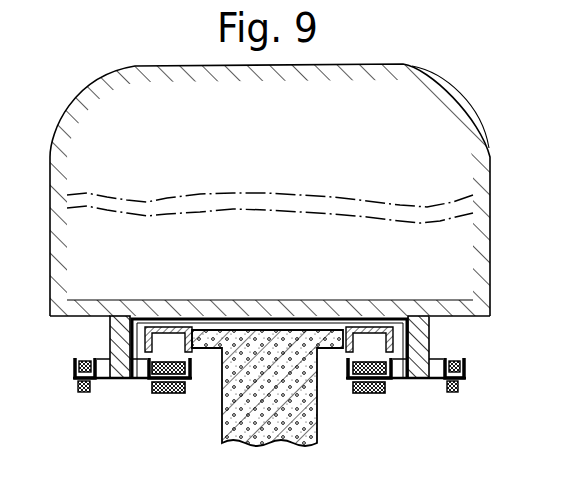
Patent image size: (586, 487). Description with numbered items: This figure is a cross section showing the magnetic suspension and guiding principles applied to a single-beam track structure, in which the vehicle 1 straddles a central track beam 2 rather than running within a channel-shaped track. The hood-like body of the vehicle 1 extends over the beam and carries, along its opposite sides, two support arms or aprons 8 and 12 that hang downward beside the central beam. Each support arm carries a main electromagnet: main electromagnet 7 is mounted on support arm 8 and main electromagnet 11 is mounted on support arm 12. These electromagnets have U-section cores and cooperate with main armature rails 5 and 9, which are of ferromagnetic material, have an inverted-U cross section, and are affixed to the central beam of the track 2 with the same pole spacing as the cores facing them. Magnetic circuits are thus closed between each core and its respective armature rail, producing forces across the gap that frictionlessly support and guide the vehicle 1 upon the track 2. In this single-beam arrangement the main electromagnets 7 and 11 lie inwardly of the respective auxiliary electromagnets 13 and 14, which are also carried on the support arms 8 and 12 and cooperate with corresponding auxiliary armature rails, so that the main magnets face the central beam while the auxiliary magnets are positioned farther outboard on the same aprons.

The vehicle 1 is at (466, 162).
The track 2 is at (283, 428).
The main armature rail 5 is at (190, 353).
The main electromagnet 7 is at (148, 377).
The support arm 8 is at (121, 332).
The main armature rail 9 is at (346, 353).
The main electromagnet 11 is at (391, 376).
The support arm 12 is at (415, 341).
The auxiliary electromagnet 13 is at (75, 380).
The auxiliary electromagnet 14 is at (464, 377).